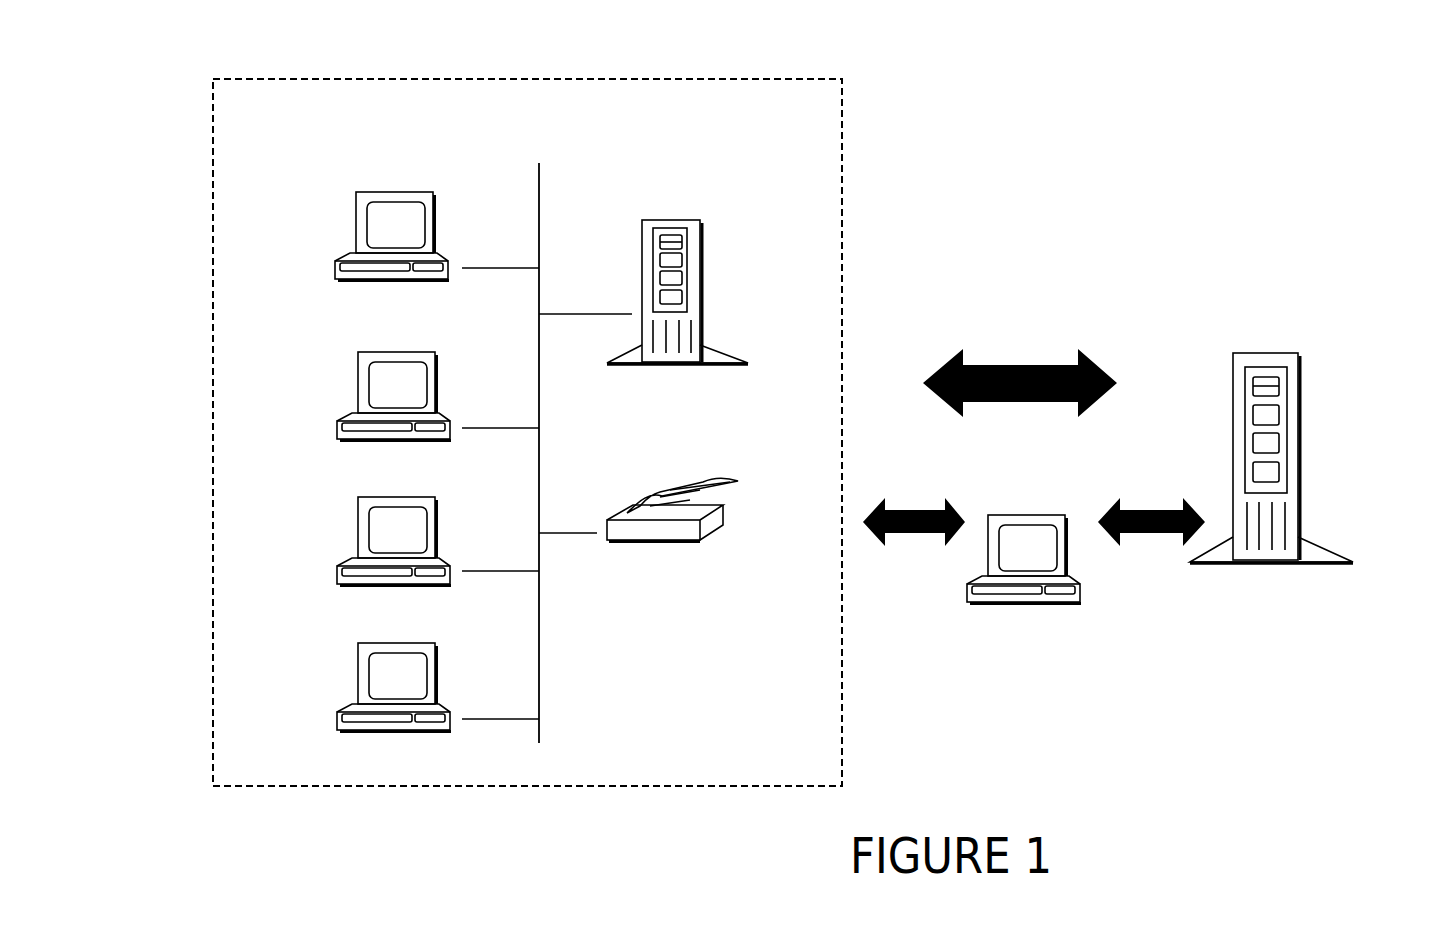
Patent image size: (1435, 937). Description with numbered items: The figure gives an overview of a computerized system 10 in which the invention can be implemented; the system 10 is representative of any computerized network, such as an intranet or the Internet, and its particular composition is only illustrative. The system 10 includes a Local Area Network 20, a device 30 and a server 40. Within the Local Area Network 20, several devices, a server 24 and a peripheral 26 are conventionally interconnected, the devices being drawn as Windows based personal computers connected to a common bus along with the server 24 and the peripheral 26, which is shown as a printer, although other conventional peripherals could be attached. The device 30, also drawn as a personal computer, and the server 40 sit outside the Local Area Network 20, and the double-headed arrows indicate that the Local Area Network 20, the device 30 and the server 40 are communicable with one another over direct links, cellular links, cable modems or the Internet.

The computerized system 10 is at (1136, 147).
The Local Area Network 20 is at (713, 79).
The server 24 is at (703, 273).
The peripheral 26 is at (703, 480).
The device 30 is at (1037, 515).
The server 40 is at (1273, 353).